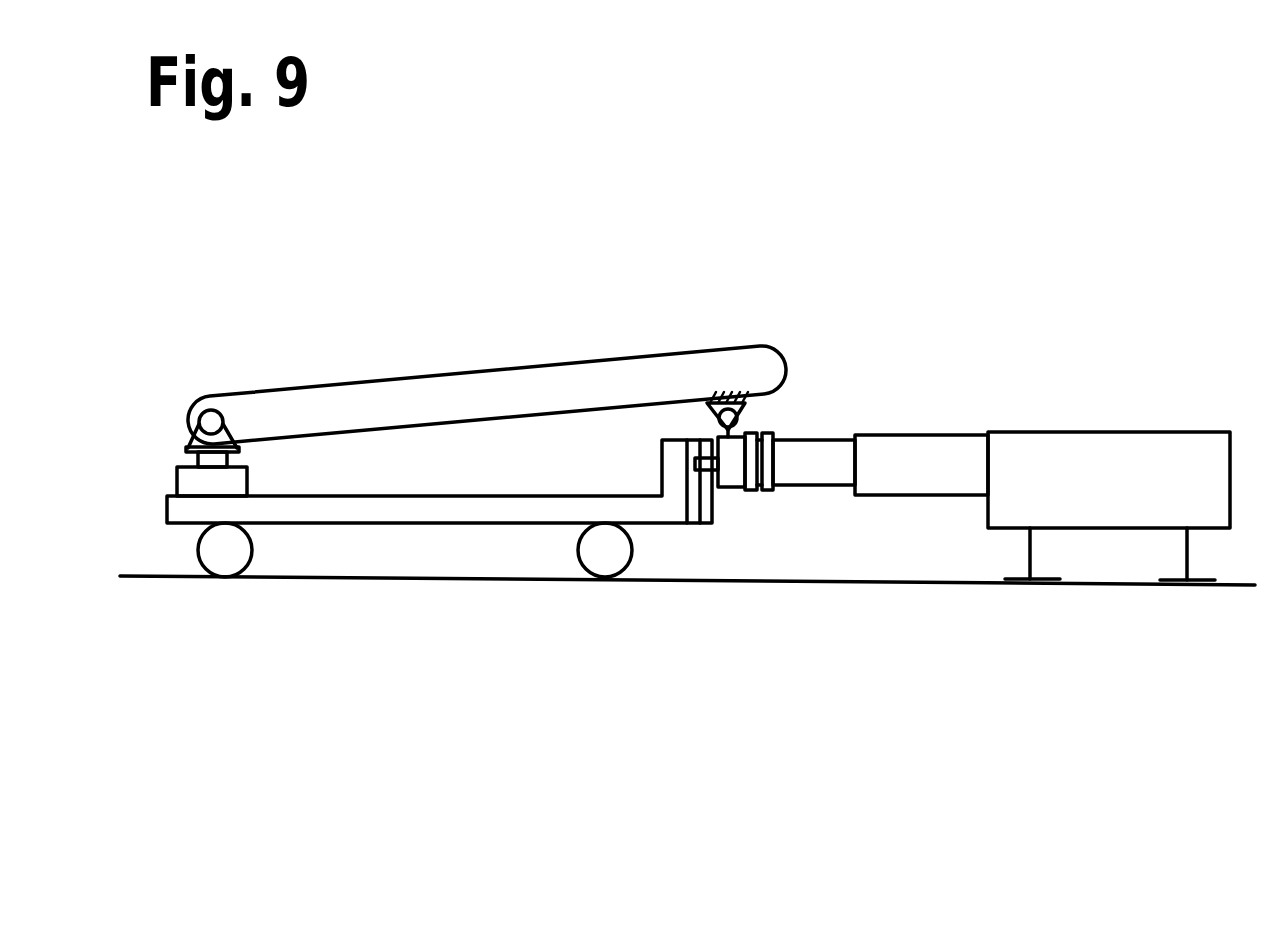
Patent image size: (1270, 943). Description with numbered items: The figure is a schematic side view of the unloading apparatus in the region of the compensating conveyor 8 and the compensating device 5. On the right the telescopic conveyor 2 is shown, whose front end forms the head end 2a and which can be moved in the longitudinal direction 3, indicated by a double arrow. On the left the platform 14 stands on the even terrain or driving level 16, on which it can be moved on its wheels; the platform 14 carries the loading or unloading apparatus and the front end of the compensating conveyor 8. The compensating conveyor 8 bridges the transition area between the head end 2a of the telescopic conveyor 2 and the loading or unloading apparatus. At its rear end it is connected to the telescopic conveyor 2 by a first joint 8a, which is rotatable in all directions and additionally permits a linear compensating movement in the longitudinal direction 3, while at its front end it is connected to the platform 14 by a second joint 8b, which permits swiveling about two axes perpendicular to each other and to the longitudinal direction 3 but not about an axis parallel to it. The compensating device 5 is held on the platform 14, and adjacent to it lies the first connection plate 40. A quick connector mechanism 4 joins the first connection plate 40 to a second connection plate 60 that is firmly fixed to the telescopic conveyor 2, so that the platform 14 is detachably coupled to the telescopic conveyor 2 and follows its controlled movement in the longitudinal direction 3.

The telescopic conveyor 2 is at (1086, 410).
The head end of the telescopic conveyor 2a is at (795, 432).
The longitudinal direction 3 is at (998, 397).
The quick connector mechanism 4 is at (757, 502).
The first connection plate 40 is at (746, 502).
The second connection plate 60 is at (774, 502).
The compensating device 5 is at (706, 533).
The compensating conveyor 8 is at (430, 398).
The first joint 8a is at (768, 405).
The second joint 8b is at (150, 443).
The platform 14 is at (475, 510).
The driving level 16 is at (398, 580).